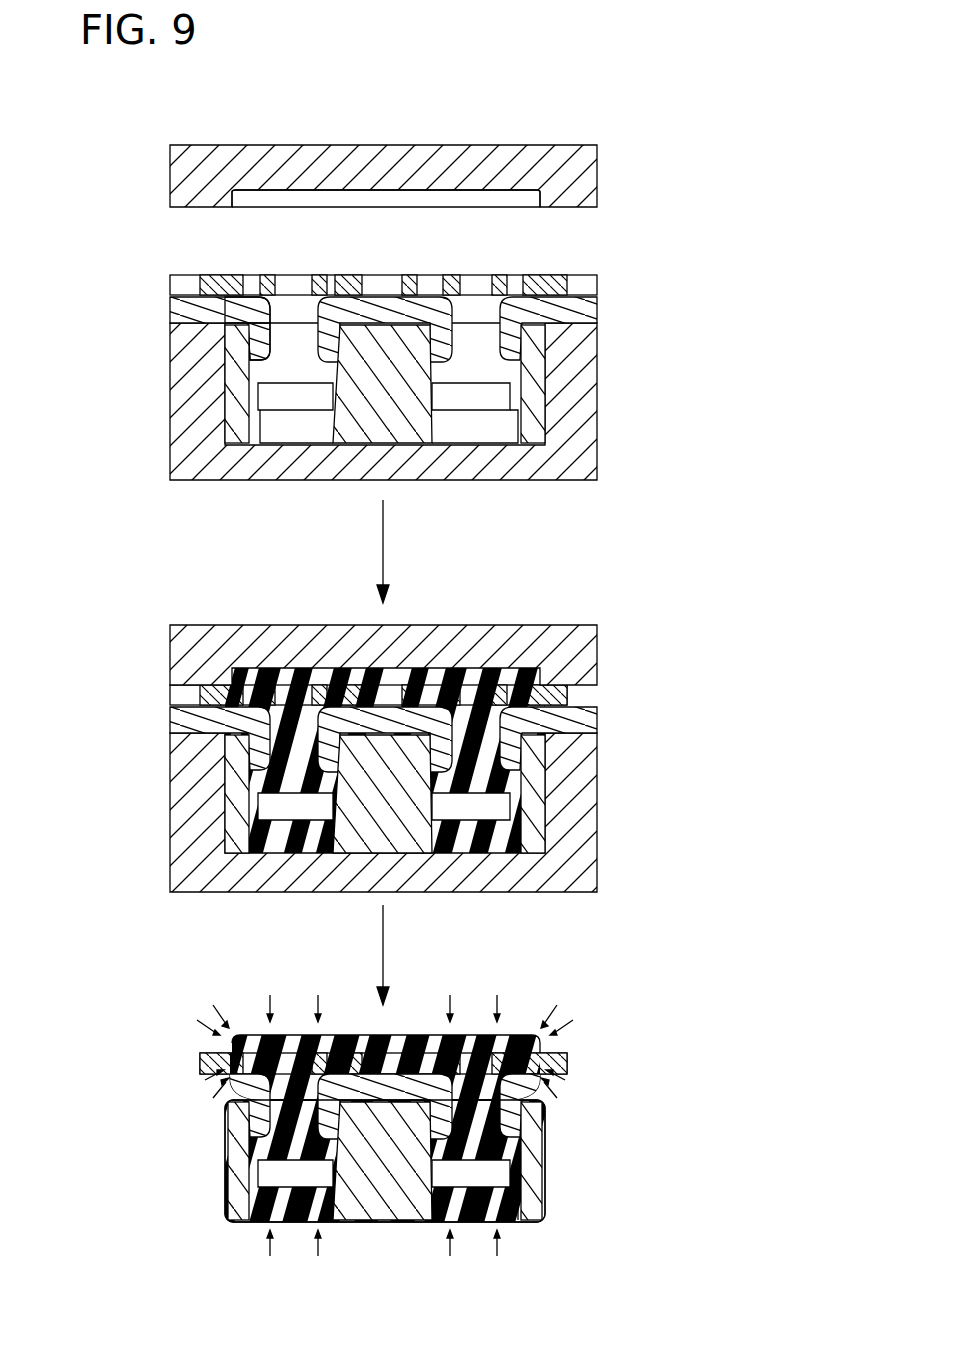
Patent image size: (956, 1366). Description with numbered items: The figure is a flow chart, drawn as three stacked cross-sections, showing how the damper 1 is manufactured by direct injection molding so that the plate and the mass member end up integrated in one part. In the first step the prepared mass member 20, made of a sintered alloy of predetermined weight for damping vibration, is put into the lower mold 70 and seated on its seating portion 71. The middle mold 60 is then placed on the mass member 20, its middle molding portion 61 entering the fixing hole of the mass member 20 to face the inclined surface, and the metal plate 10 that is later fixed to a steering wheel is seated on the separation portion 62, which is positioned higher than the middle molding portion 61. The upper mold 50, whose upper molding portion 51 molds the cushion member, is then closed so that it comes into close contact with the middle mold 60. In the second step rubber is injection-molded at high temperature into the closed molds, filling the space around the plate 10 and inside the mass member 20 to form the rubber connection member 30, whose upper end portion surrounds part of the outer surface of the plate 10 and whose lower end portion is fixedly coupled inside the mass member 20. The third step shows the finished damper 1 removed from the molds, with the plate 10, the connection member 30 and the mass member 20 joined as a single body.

The damper 1 is at (168, 1032).
The plate 10 is at (583, 288).
The mass member 20 is at (560, 408).
The connection member 30 is at (540, 667).
The upper mold 50 is at (592, 162).
The upper molding portion 51 is at (490, 193).
The middle mold 60 is at (187, 298).
The middle molding portion 61 is at (233, 337).
The separation portion 62 is at (215, 293).
The lower mold 70 is at (212, 463).
The seating portion 71 is at (237, 402).